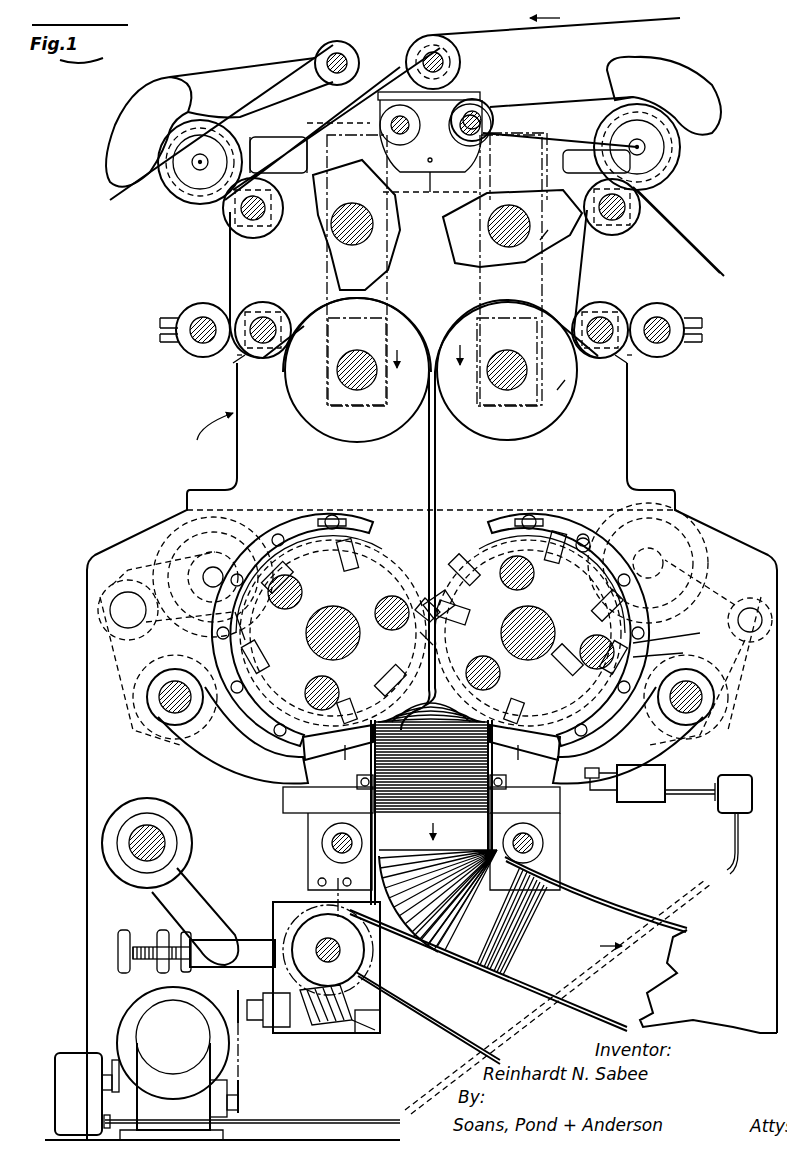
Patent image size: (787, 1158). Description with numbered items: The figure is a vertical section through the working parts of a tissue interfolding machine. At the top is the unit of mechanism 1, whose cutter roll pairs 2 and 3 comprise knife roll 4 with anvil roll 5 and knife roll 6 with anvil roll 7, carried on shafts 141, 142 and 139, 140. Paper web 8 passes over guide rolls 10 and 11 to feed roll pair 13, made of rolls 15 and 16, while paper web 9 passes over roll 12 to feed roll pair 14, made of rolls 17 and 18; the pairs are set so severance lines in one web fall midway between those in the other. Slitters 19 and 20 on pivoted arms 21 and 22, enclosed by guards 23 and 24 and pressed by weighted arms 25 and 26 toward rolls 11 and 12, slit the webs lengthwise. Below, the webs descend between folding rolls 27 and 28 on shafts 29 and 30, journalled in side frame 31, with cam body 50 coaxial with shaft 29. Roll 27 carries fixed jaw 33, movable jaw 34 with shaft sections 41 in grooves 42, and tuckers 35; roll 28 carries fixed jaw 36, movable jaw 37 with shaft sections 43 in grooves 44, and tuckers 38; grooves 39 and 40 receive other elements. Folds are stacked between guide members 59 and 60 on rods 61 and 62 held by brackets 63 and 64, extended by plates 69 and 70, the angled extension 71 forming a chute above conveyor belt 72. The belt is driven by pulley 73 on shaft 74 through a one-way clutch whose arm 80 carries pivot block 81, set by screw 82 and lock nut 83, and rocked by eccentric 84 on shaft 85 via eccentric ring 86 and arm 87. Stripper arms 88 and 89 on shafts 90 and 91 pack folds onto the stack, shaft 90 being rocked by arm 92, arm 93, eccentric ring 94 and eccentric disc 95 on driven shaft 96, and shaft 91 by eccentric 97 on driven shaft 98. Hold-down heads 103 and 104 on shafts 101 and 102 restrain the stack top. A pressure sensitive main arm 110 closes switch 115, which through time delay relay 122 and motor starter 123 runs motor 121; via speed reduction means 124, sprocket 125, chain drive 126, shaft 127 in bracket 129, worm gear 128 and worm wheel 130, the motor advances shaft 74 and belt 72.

The unit of mechanism 1 is at (212, 434).
The cutter roll pair 2 is at (547, 303).
The cutter roll pair 3 is at (318, 302).
The knife roll 4 is at (563, 233).
The anvil roll 5 is at (567, 387).
The knife roll 6 is at (313, 245).
The anvil roll 7 is at (300, 420).
The paper web 8 is at (680, 20).
The paper web 9 is at (703, 262).
The guide roll 10 is at (461, 56).
The guide roll 11 is at (230, 207).
The guide roll 12 is at (635, 217).
The feed roll pair 13 is at (223, 360).
The feed roll pair 14 is at (640, 363).
The feed roll 15 is at (197, 302).
The feed roll 16 is at (258, 302).
The feed roll 17 is at (607, 358).
The feed roll 18 is at (680, 357).
The slitter 19 is at (262, 158).
The slitter 20 is at (552, 167).
The slitter arm 21 is at (279, 92).
The slitter arm 22 is at (567, 120).
The guard 23 is at (175, 172).
The guard 24 is at (680, 157).
The weighted arm 25 is at (125, 102).
The weighted arm 26 is at (693, 80).
The folding roll 27 is at (302, 543).
The folding roll 28 is at (563, 547).
The shaft 29 is at (335, 612).
The shaft 30 is at (533, 610).
The side frame 31 is at (86, 697).
The fixed jaw element 33 is at (417, 577).
The movable jaw element 34 is at (420, 630).
The tucker 35 is at (355, 533).
The fixed jaw 36 is at (660, 652).
The movable jaw 37 is at (685, 643).
The fixed tucker 38 is at (585, 536).
The groove 39 is at (283, 732).
The groove 40 is at (470, 587).
The shaft section 41 is at (385, 608).
The groove 42 is at (323, 617).
The shaft section 43 is at (580, 643).
The groove 44 is at (490, 543).
The cam body 50 is at (287, 520).
The stack guide member 59 is at (333, 753).
The stack guide member 60 is at (520, 762).
The transverse rod 61 is at (376, 828).
The transverse rod 62 is at (487, 793).
The bracket member 63 is at (345, 782).
The bracket member 64 is at (540, 795).
The channel-forming plate 69 is at (372, 880).
The channel-forming plate 70 is at (490, 835).
The angled extension 71 is at (620, 900).
The conveyor belt 72 is at (583, 1010).
The pulley 73 is at (365, 967).
The shaft 74 is at (320, 940).
The clutch arm 80 is at (258, 938).
The pivot block 81 is at (230, 968).
The adjusting screw 82 is at (125, 932).
The lock nut 83 is at (162, 932).
The eccentric 84 is at (167, 825).
The shaft 85 is at (150, 823).
The eccentric ring 86 is at (193, 835).
The arm 87 is at (190, 897).
The stripper arm 88 is at (210, 765).
The stripper arm 89 is at (680, 745).
The shaft 90 is at (160, 710).
The shaft 91 is at (715, 705).
The arm 92 is at (128, 682).
The arm 93 is at (180, 548).
The eccentric ring 94 is at (193, 540).
The eccentric disc 95 is at (200, 590).
The driven shaft 96 is at (240, 557).
The eccentric 97 is at (672, 555).
The driven shaft 98 is at (650, 545).
The shaft 101 is at (318, 845).
The shaft 102 is at (542, 848).
The head 103 is at (338, 712).
The head 104 is at (515, 710).
The main arm portion 110 is at (665, 776).
The electric switch 115 is at (637, 800).
The electric motor 121 is at (150, 1000).
The time delay relay 122 is at (725, 800).
The motor starter 123 is at (70, 1053).
The speed reduction means 124 is at (210, 1070).
The sprocket 125 is at (243, 1110).
The chain drive 126 is at (245, 1065).
The shaft 127 is at (242, 1030).
The worm gear 128 is at (343, 1037).
The bracket member 129 is at (375, 1040).
The worm wheel 130 is at (297, 962).
The knife roll shaft 139 is at (415, 190).
The cutter roll shaft 140 is at (360, 350).
The cutter roll shaft 141 is at (490, 225).
The cutter roll shaft 142 is at (507, 350).